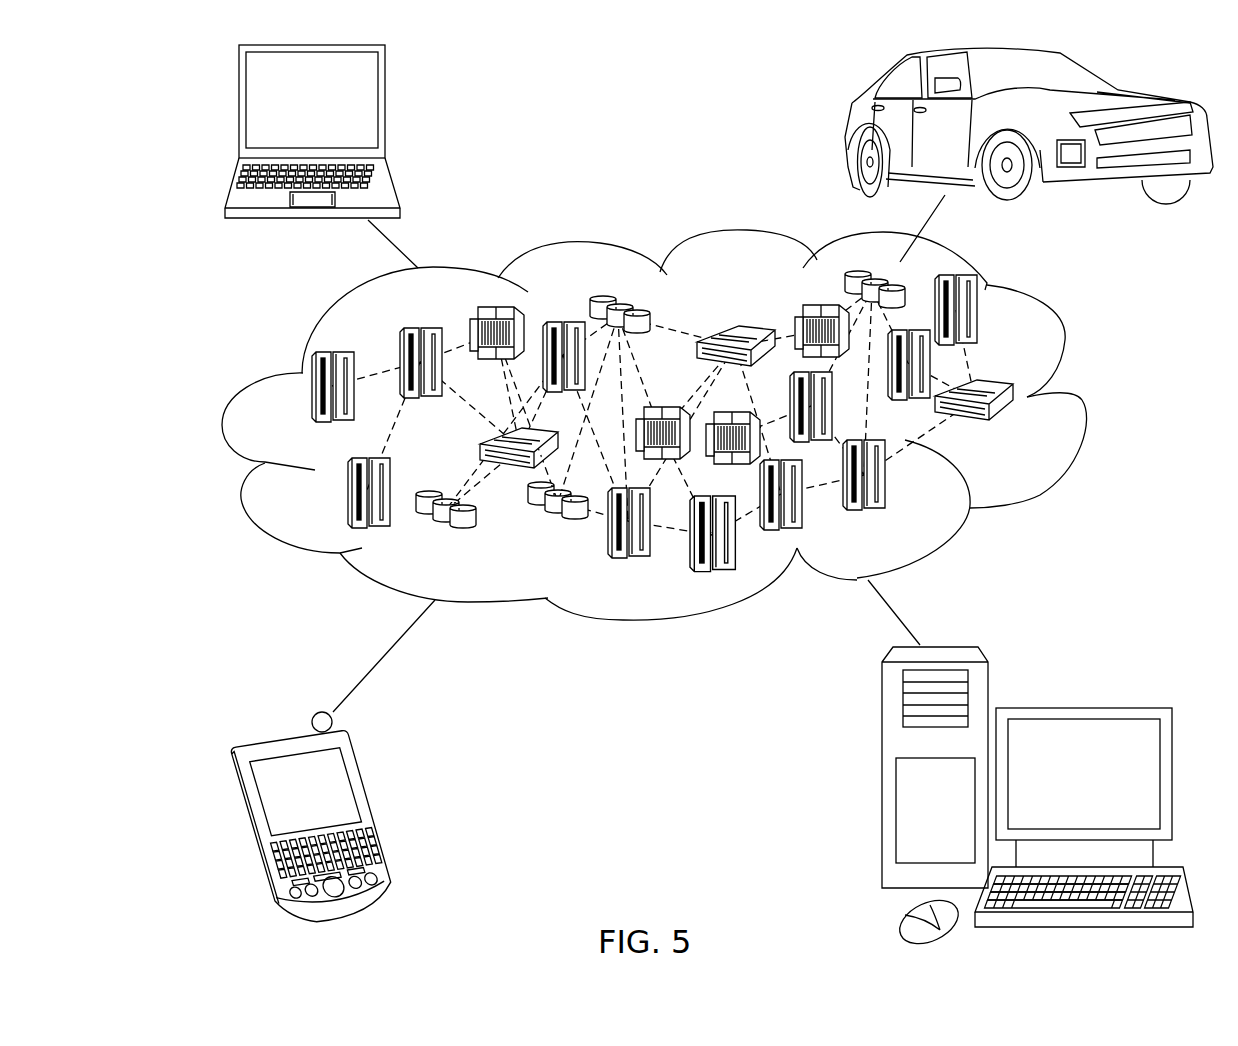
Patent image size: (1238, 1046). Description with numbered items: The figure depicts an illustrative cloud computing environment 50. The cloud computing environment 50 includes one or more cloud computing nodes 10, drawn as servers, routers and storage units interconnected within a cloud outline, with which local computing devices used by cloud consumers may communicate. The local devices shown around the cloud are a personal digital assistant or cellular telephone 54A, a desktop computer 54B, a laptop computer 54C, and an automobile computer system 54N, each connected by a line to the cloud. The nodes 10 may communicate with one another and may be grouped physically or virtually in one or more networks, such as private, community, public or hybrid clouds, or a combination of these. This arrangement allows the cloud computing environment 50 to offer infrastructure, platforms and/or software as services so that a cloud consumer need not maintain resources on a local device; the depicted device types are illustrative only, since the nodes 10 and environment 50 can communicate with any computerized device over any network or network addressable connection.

The cloud computing node 10 is at (1018, 431).
The cloud computing environment 50 is at (1080, 400).
The personal digital assistant or cellular telephone 54A is at (375, 805).
The desktop computer 54B is at (1080, 708).
The laptop computer 54C is at (386, 111).
The automobile computer system 54N is at (848, 128).